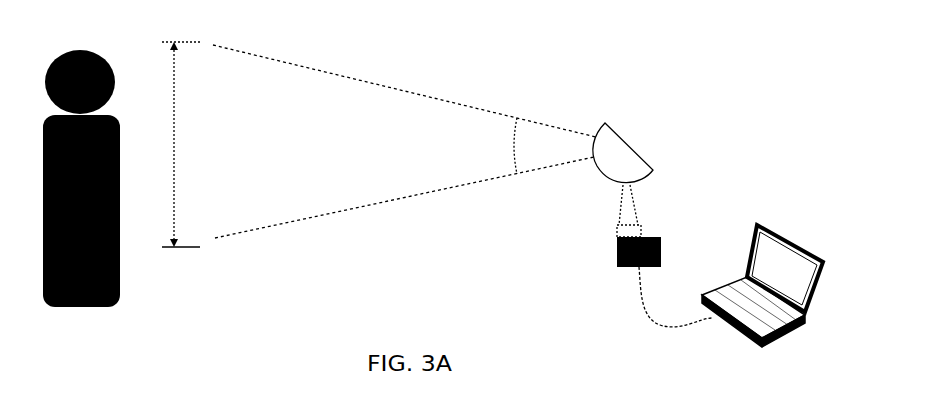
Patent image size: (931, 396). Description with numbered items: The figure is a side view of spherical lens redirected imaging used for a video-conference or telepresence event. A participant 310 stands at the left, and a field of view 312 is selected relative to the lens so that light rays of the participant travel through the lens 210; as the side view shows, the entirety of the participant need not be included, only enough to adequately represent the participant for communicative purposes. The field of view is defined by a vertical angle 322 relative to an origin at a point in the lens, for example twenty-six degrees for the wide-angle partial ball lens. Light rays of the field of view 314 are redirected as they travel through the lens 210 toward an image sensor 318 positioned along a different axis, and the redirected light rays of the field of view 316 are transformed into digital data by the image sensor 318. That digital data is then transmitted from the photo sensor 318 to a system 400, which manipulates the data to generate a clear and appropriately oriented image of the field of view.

The participant 310 is at (113, 307).
The field of view 312 is at (175, 162).
The light rays of the field of view 314 is at (278, 62).
The vertical angle 322 is at (517, 140).
The lens 210 is at (651, 172).
The redirected light rays of the field of view 316 is at (617, 200).
The image sensor 318 is at (661, 237).
The system 400 is at (785, 228).